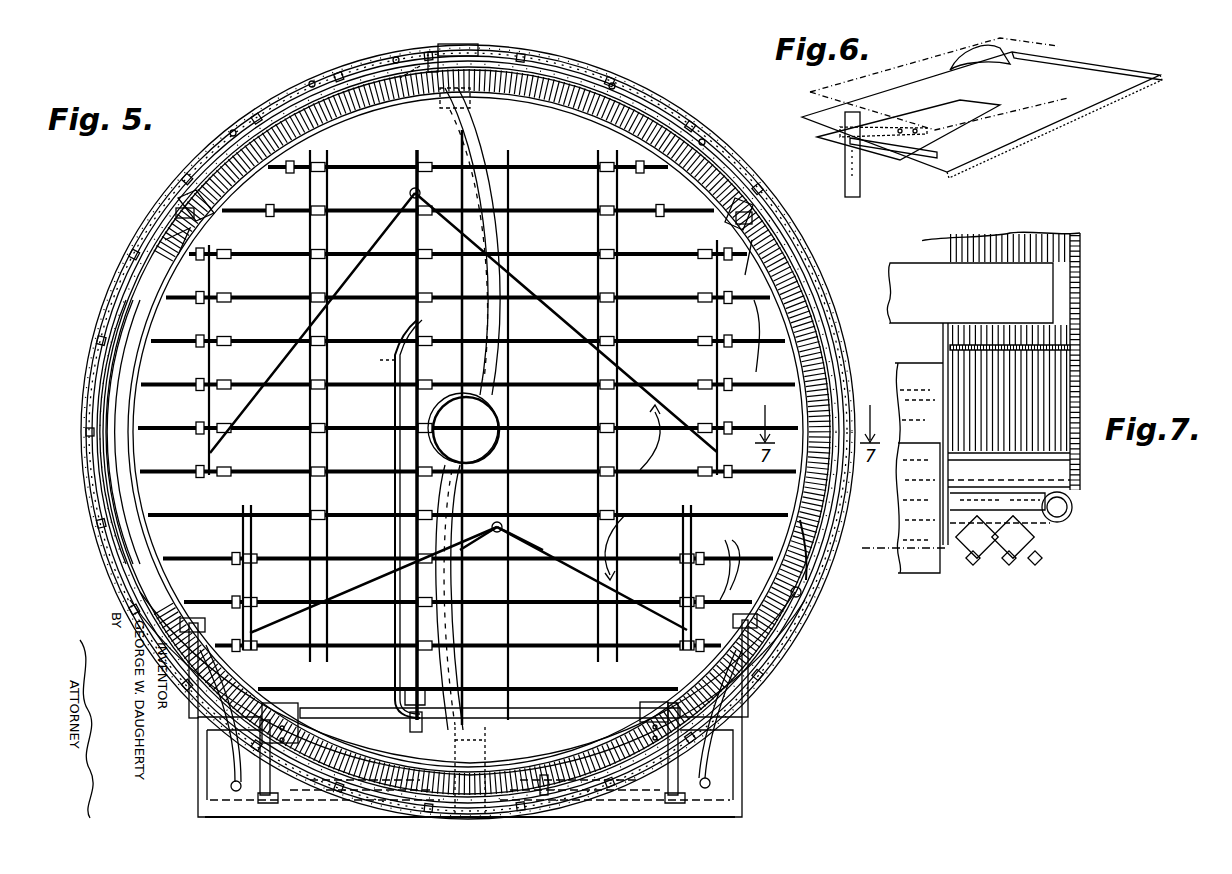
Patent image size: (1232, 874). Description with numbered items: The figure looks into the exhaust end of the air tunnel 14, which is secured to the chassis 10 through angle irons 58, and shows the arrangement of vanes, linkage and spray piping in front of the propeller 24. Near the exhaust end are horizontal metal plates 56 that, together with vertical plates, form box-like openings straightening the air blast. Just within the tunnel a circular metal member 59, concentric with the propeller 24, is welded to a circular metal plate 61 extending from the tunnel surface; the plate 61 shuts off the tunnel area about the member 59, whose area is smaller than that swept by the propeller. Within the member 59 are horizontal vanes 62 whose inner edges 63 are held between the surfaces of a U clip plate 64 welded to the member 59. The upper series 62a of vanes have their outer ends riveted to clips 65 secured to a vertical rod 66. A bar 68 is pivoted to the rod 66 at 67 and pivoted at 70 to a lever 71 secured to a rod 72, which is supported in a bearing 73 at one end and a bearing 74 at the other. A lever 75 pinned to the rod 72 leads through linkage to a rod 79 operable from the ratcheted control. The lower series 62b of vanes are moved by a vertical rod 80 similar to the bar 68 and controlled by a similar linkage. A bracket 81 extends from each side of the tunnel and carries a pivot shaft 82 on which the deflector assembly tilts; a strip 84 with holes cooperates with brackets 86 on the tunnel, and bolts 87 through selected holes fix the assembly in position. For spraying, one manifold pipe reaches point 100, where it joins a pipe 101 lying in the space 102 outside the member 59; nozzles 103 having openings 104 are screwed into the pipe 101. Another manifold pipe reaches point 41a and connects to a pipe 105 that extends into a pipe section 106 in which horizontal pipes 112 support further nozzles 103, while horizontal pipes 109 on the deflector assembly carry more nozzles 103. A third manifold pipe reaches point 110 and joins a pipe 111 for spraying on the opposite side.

In FIG. 5, the chassis 10 is at (746, 742).
In FIG. 7, the air tunnel 14 is at (1082, 246).
In FIG. 5, the propeller 24 is at (496, 318).
In FIG. 5, the connection point of pipe 41 41a is at (746, 802).
In FIG. 7, the horizontal metal plates 56 is at (1040, 296).
In FIG. 5, the angle irons 58 is at (748, 719).
In FIG. 5, the circular metal member 59 is at (758, 286).
In FIG. 7, the circular metal member 59 is at (945, 555).
In FIG. 5, the circular metal plate 61 is at (796, 560).
In FIG. 7, the circular metal plate 61 is at (1030, 350).
In FIG. 5, the horizontal vanes 62 is at (757, 374).
In FIG. 6, the horizontal vanes 62 is at (998, 132).
In FIG. 7, the horizontal vanes 62 is at (925, 578).
In FIG. 5, the upper series of vanes 62a is at (644, 451).
In FIG. 5, the lower series of vanes 62b is at (630, 538).
In FIG. 6, the inner edges of vanes 63 is at (1140, 88).
In FIG. 6, the U clip plate 64 is at (1138, 78).
In FIG. 7, the U clip plate 64 is at (905, 366).
In FIG. 5, the clips 65 is at (607, 252).
In FIG. 6, the clips 65 is at (900, 160).
In FIG. 5, the vertical rod 66 is at (417, 266).
In FIG. 6, the vertical rod 66 is at (858, 188).
In FIG. 5, the pivot 67 is at (413, 322).
In FIG. 5, the bar 68 is at (393, 497).
In FIG. 5, the pivot 70 is at (410, 728).
In FIG. 5, the lever 71 is at (405, 694).
In FIG. 5, the rod 72 is at (360, 708).
In FIG. 5, the bearing 73 is at (290, 704).
In FIG. 5, the bearing 74 is at (512, 734).
In FIG. 5, the lever 75 is at (232, 770).
In FIG. 5, the rod 79 is at (260, 798).
In FIG. 5, the vertical rod 80 is at (252, 534).
In FIG. 5, the bracket 81 is at (200, 676).
In FIG. 5, the pivot shaft 82 is at (196, 618).
In FIG. 5, the strip 84 is at (186, 202).
In FIG. 5, the brackets 86 is at (172, 242).
In FIG. 5, the bolts 87 is at (178, 212).
In FIG. 5, the connection point of pipe 40 100 is at (712, 782).
In FIG. 5, the pipe 101 is at (802, 592).
In FIG. 7, the pipe 101 is at (1073, 505).
In FIG. 5, the space 102 is at (800, 576).
In FIG. 5, the nozzles 103 is at (648, 96).
In FIG. 7, the nozzles 103 is at (985, 548).
In FIG. 7, the openings 104 is at (1035, 566).
In FIG. 5, the pipe 105 is at (547, 778).
In FIG. 5, the pipe section 106 is at (482, 50).
In FIG. 5, the horizontal pipes 109 is at (262, 108).
In FIG. 5, the connection point of pipe 42 110 is at (230, 787).
In FIG. 5, the pipe 111 is at (93, 512).
In FIG. 5, the horizontal pipes 112 is at (232, 130).